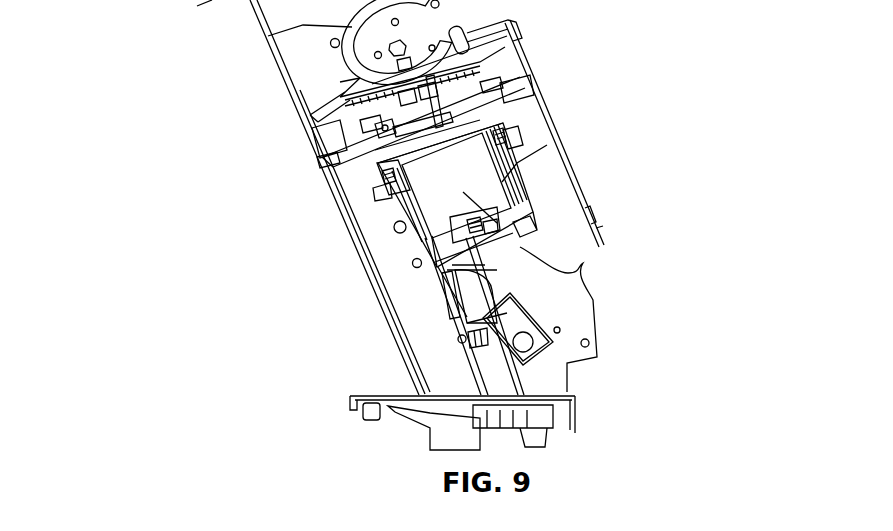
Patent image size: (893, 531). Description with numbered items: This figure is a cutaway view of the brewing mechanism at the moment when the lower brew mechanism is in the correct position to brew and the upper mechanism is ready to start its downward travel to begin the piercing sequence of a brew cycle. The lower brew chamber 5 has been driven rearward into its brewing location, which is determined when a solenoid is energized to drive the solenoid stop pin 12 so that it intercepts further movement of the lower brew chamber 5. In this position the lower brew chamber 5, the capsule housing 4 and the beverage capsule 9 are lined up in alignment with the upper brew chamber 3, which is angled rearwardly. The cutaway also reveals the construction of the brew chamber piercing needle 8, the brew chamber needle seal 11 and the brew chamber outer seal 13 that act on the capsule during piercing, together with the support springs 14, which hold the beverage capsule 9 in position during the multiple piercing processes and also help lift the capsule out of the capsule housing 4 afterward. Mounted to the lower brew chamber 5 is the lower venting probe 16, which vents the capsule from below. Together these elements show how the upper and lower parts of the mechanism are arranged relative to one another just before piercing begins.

The upper brew chamber 3 is at (330, 137).
The capsule housing 4 is at (478, 140).
The lower brew chamber 5 is at (547, 145).
The brew chamber piercing needle 8 is at (508, 36).
The beverage capsule 9 is at (583, 263).
The brew chamber needle seal 11 is at (355, 101).
The solenoid stop pin 12 is at (395, 228).
The brew chamber outer seal 13 is at (383, 130).
The support springs 14 is at (497, 140).
The lower venting probe 16 is at (465, 240).